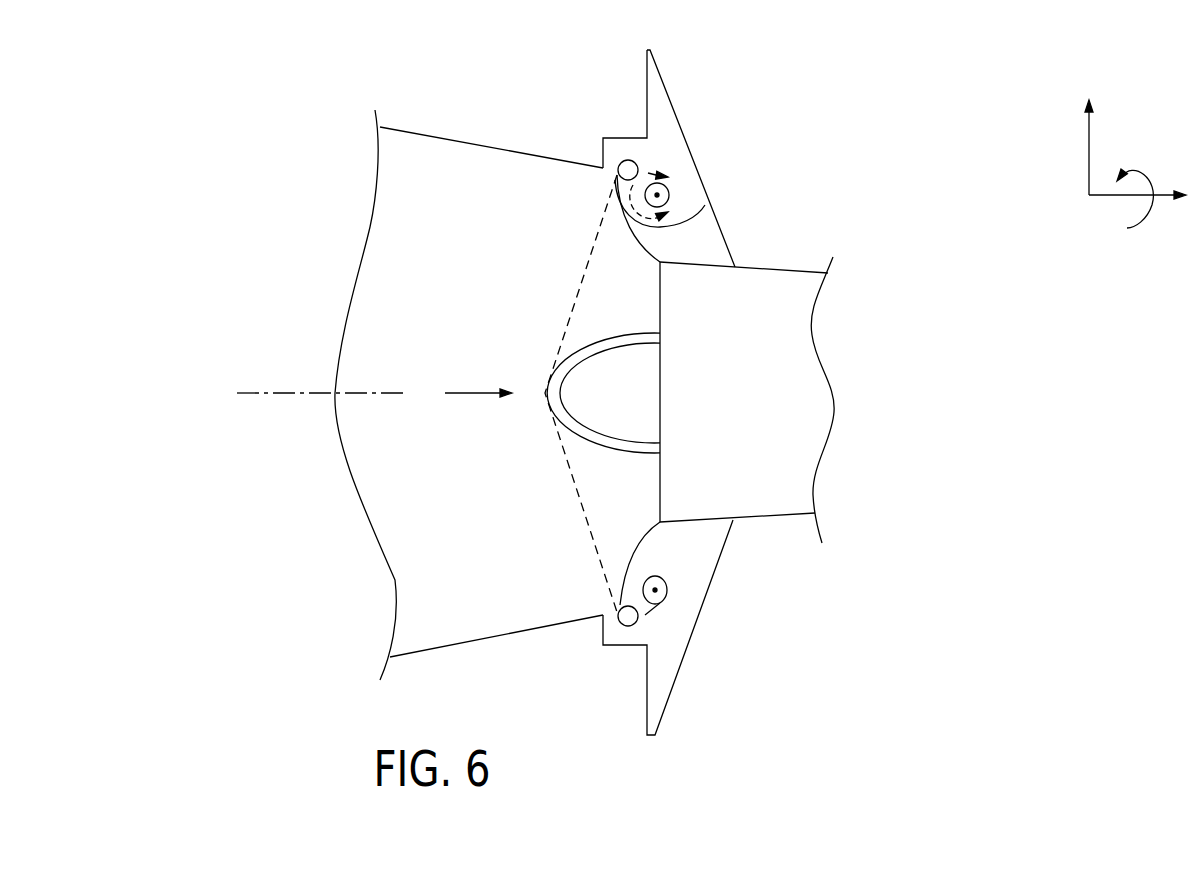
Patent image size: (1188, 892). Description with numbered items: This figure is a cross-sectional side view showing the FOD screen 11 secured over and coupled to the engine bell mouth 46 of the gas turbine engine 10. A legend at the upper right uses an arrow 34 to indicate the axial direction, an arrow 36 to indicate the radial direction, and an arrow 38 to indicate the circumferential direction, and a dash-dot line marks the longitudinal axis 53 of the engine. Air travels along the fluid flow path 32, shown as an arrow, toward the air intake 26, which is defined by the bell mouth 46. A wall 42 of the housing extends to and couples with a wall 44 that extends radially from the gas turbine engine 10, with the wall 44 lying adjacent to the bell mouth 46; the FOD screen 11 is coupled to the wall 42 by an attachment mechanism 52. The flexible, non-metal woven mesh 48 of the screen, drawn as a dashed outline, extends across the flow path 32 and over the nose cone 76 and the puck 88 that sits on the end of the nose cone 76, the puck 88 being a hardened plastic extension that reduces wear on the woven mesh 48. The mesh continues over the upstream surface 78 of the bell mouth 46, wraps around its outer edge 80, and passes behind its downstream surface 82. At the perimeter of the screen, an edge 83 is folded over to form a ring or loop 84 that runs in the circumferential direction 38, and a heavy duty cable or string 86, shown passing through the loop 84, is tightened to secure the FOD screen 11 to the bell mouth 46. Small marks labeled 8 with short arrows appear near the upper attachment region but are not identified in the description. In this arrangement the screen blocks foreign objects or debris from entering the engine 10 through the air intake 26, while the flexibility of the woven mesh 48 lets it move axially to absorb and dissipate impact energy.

The angle 8 is at (663, 185).
The gas turbine engine 10 is at (797, 540).
The FOD screen 11 is at (543, 286).
The air intake 26 is at (638, 292).
The fluid flow path 32 is at (472, 394).
The axial axis 34 is at (1112, 197).
The radial axis 36 is at (1088, 157).
The circumferential axis 38 is at (1147, 172).
The wall 42 is at (422, 132).
The wall 44 is at (696, 157).
The bell mouth 46 is at (686, 218).
The woven mesh 48 is at (580, 273).
The attachment mechanism 52 is at (654, 152).
The longitudinal axis 53 is at (400, 392).
The nose cone 76 is at (590, 348).
The upstream surface 78 is at (628, 563).
The outer edge 80 is at (625, 640).
The downstream surface 82 is at (642, 543).
The edge 83 is at (662, 610).
The ring or loop 84 is at (667, 590).
The cable or string 86 is at (658, 194).
The puck 88 is at (547, 393).